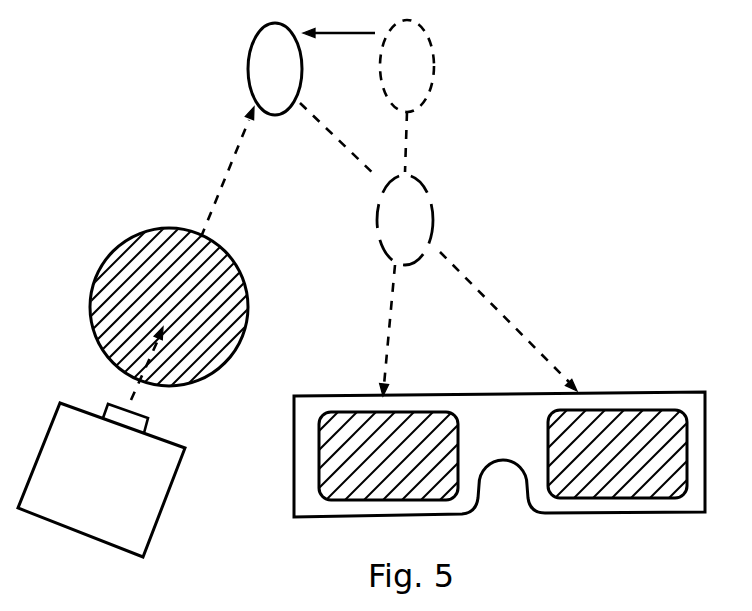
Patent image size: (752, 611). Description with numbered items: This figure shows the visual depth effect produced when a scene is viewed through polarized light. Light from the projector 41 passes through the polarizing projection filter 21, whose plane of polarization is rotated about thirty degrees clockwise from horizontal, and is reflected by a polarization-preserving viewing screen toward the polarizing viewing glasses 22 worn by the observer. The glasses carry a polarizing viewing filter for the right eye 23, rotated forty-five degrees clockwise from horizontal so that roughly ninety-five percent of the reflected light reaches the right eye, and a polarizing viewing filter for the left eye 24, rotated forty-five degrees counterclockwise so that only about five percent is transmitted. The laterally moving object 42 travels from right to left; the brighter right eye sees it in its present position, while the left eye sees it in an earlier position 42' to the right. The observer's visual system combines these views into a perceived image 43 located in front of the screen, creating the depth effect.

The polarizing projection filter 21 is at (137, 273).
The polarizing viewing glasses 22 is at (625, 398).
The polarizing viewing filter for the right eye 23 is at (637, 432).
The polarizing viewing filter for the left eye 24 is at (413, 440).
The projector 41 is at (60, 448).
The laterally moving object 42 is at (209, 69).
The position of the laterally moving object seen by the left eye 42' is at (469, 74).
The perceived image 43 is at (412, 199).